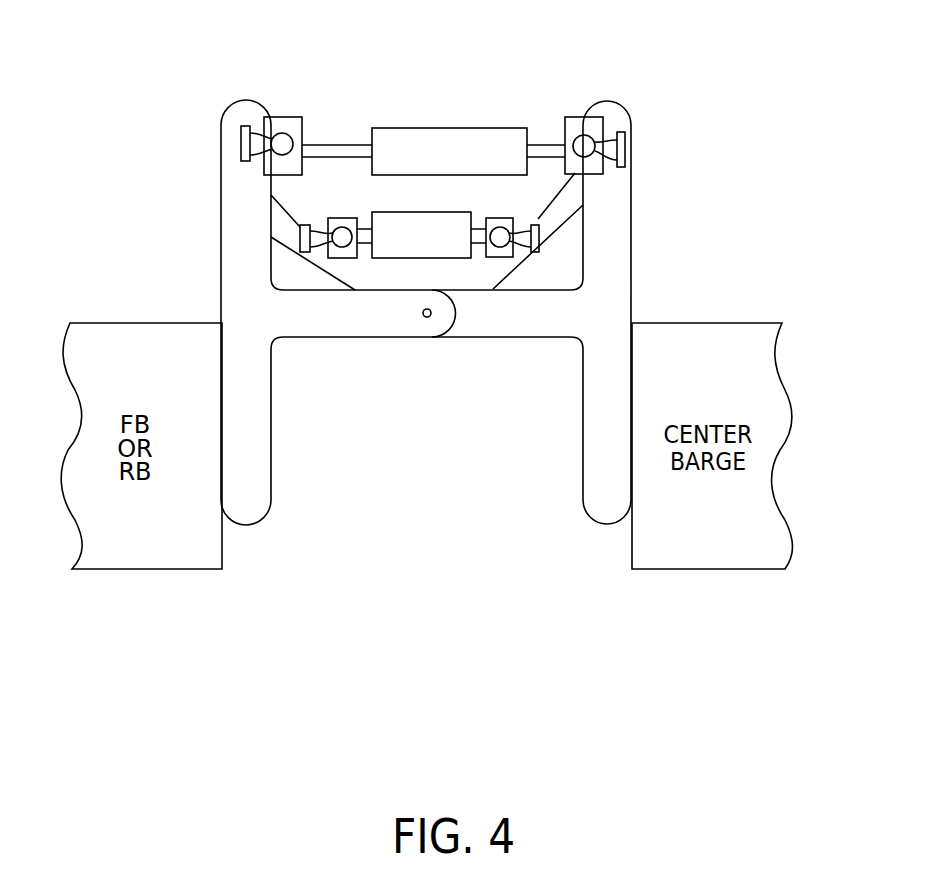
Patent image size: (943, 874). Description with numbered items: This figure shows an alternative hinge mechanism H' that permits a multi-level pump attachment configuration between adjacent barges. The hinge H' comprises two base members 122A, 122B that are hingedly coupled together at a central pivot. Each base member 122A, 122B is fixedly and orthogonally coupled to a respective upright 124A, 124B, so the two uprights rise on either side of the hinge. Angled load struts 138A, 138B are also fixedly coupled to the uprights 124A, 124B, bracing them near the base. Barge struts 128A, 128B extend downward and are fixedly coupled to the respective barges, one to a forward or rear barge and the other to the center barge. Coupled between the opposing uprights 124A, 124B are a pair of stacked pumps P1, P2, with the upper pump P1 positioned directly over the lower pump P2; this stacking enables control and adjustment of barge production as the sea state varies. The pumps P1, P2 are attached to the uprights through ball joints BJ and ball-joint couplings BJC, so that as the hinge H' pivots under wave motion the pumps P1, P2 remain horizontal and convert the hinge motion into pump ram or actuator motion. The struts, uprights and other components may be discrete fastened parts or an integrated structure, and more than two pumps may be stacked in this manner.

The base member 122A is at (285, 312).
The base member 122B is at (594, 312).
The upright 124A is at (244, 240).
The upright 124B is at (618, 217).
The barge strut 128A is at (247, 495).
The barge strut 128B is at (613, 442).
The angled load strut 138A is at (337, 283).
The angled load strut 138B is at (520, 280).
The ball joint BJ is at (282, 143).
The ball-joint coupling BJC is at (302, 117).
The pump P1 is at (433, 151).
The pump P2 is at (421, 235).
The hinge mechanism H' is at (784, 67).